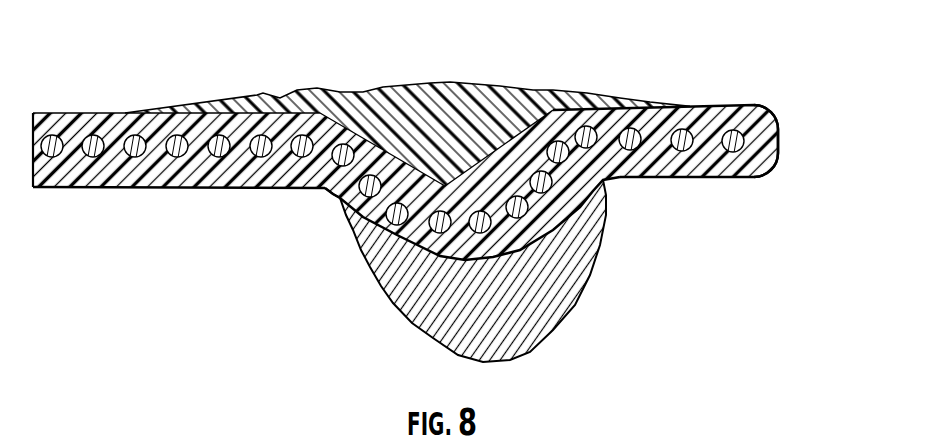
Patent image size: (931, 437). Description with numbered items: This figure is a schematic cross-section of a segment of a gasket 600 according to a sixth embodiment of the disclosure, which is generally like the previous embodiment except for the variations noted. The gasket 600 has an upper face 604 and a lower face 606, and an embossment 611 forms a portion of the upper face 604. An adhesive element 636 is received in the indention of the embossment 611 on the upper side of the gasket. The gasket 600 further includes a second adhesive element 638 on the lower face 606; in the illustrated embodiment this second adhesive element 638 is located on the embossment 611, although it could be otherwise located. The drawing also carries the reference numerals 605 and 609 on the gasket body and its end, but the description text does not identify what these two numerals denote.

The gasket 600 is at (708, 95).
The upper face 604 is at (117, 113).
The optical fiber 605 is at (740, 156).
The lower face 606 is at (172, 187).
The rounded edge 609 is at (768, 133).
The embossment 611 is at (386, 238).
The adhesive element 636 is at (480, 107).
The second adhesive element 638 is at (537, 333).